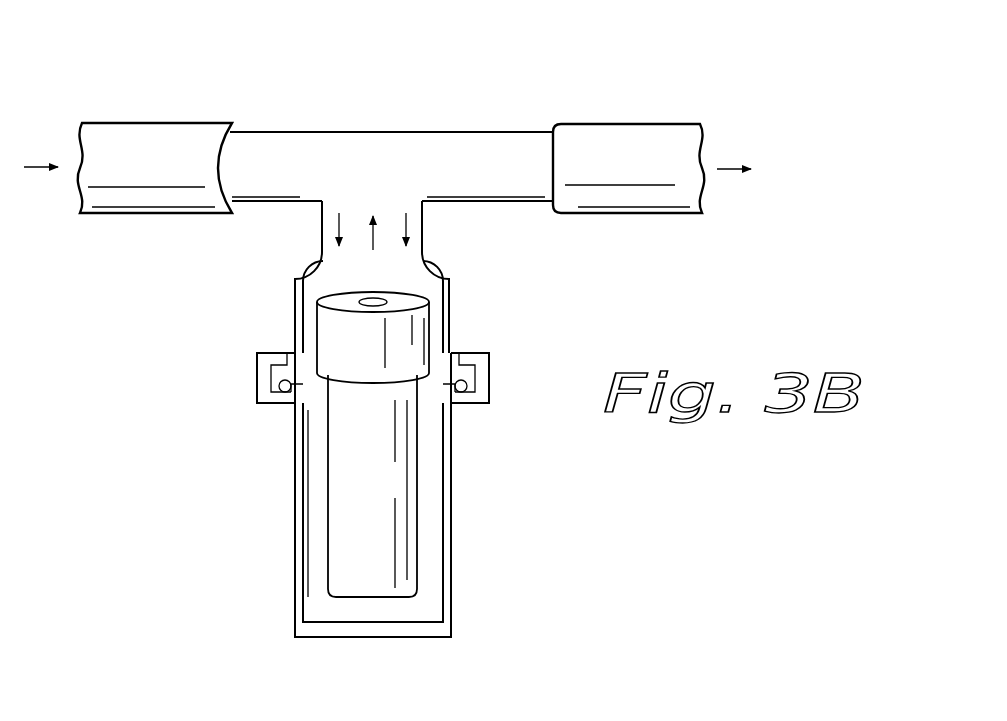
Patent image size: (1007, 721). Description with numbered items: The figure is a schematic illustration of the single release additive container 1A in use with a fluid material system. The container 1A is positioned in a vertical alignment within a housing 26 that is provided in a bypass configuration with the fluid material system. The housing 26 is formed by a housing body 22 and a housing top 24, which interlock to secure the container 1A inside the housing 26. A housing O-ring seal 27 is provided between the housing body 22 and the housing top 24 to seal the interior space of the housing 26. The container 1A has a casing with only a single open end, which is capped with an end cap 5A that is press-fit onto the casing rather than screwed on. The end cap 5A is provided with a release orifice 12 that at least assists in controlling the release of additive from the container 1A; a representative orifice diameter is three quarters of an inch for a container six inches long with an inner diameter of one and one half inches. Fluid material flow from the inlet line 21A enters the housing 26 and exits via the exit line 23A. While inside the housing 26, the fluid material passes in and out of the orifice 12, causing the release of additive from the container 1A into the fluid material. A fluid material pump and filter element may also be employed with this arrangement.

The inlet line 21A is at (165, 148).
The exit line 23A is at (632, 148).
The housing top 24 is at (451, 270).
The housing body 22 is at (452, 552).
The housing 26 is at (270, 549).
The housing O-ring seal 27 is at (285, 397).
The end cap 5A is at (410, 346).
The release orifice 12 is at (362, 300).
The container 1A is at (390, 489).